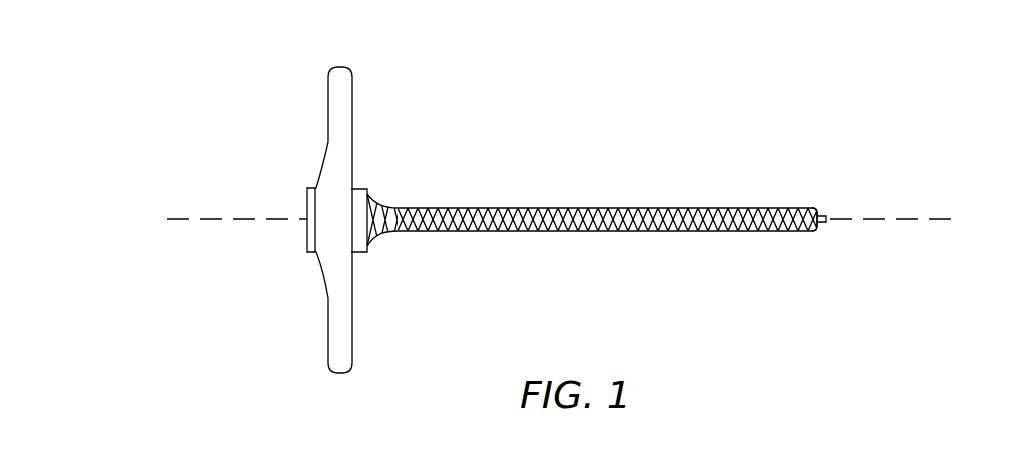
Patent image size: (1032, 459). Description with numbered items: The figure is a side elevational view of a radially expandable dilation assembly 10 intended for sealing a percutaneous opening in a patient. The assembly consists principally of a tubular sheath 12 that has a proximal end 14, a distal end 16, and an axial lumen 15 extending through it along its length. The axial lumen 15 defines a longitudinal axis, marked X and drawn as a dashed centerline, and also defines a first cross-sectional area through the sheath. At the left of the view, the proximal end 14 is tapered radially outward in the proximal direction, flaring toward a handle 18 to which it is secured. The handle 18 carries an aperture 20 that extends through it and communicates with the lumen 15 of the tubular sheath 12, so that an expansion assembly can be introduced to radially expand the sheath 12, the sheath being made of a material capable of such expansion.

The radially expandable dilation assembly 10 is at (586, 199).
The tubular sheath 12 is at (690, 231).
The proximal end 14 is at (408, 188).
The axial lumen 15 is at (827, 219).
The distal end 16 is at (812, 196).
The handle 18 is at (345, 95).
The aperture 20 is at (307, 238).